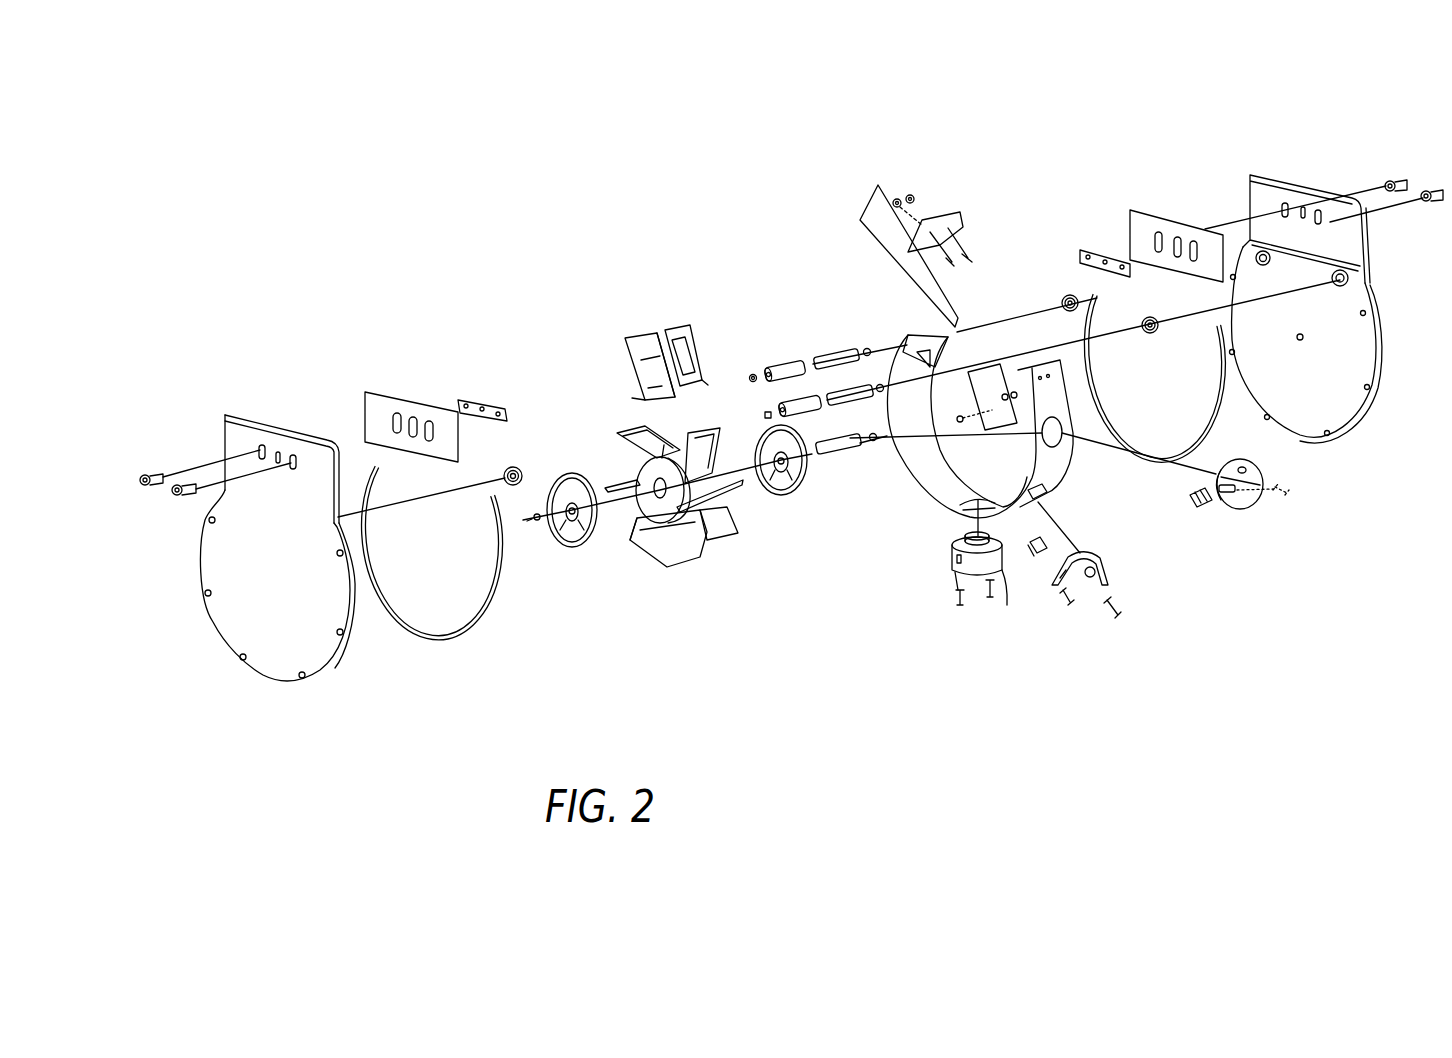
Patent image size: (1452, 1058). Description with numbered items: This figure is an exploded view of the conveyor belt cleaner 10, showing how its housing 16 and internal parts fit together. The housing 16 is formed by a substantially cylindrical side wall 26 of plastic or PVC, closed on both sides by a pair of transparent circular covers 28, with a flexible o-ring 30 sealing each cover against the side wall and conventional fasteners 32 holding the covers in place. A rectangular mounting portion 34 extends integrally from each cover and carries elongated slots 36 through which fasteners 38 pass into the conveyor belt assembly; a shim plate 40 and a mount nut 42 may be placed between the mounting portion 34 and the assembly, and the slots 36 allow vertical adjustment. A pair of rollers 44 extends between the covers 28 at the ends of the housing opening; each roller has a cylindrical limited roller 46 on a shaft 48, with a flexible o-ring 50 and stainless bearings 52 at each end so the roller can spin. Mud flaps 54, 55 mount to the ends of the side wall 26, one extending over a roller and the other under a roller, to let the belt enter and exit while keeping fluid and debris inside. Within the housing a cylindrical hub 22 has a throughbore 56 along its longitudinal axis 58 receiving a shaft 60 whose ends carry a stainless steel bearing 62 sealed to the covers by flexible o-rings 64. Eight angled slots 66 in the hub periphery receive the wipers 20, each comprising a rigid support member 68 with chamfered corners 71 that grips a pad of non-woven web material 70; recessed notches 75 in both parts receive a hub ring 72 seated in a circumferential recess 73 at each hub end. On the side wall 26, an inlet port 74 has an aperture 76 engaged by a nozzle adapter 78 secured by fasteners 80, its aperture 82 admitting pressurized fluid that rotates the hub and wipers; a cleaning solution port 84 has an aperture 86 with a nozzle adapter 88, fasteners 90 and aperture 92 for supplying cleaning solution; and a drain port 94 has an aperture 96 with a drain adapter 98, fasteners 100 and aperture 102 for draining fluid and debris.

The conveyor belt cleaner 10 is at (565, 207).
The housing 16 is at (822, 637).
The wipers 20 is at (650, 275).
The hub 22 is at (720, 520).
The side wall 26 is at (1062, 472).
The circular covers 28 is at (260, 670).
The flexible o-ring 30 is at (478, 628).
The fasteners 32 is at (303, 678).
The rectangular mounting portion 34 is at (228, 417).
The elongated slots 36 is at (262, 445).
The fasteners 38 is at (178, 500).
The shim plate 40 is at (366, 392).
The mount nut 42 is at (462, 398).
The rollers 44 is at (807, 338).
The limited roller 46 is at (783, 362).
The shaft 48 is at (830, 352).
The flexible o-ring 50 is at (865, 350).
The stainless bearings 52 is at (507, 470).
The mud flap 54 is at (953, 210).
The mud flap 55 is at (996, 428).
The throughbore 56 is at (656, 515).
The longitudinal axis 58 is at (616, 505).
The shaft 60 is at (840, 452).
The stainless steel bearing 62 is at (580, 522).
The flexible o-rings 64 is at (539, 523).
The slots 66 is at (665, 445).
The rigid support member 68 is at (688, 325).
The non-woven web material 70 is at (627, 340).
The chamfered corners 71 is at (665, 330).
The hub ring 72 is at (565, 478).
The circumferential recess 73 is at (695, 555).
The inlet port 74 is at (1240, 512).
The recessed notches 75 is at (700, 378).
The aperture 76 is at (1062, 425).
The nozzle adapter 78 is at (1220, 505).
The fasteners 80 is at (1278, 497).
The aperture 82 is at (1258, 468).
The cleaning solution port 84 is at (1062, 592).
The aperture 86 is at (1048, 496).
The nozzle adapter 88 is at (1050, 600).
The fasteners 90 is at (1118, 620).
The aperture 92 is at (1097, 570).
The drain port 94 is at (952, 560).
The aperture 96 is at (955, 500).
The drain adapter 98 is at (995, 598).
The fasteners 100 is at (960, 608).
The aperture 102 is at (965, 538).